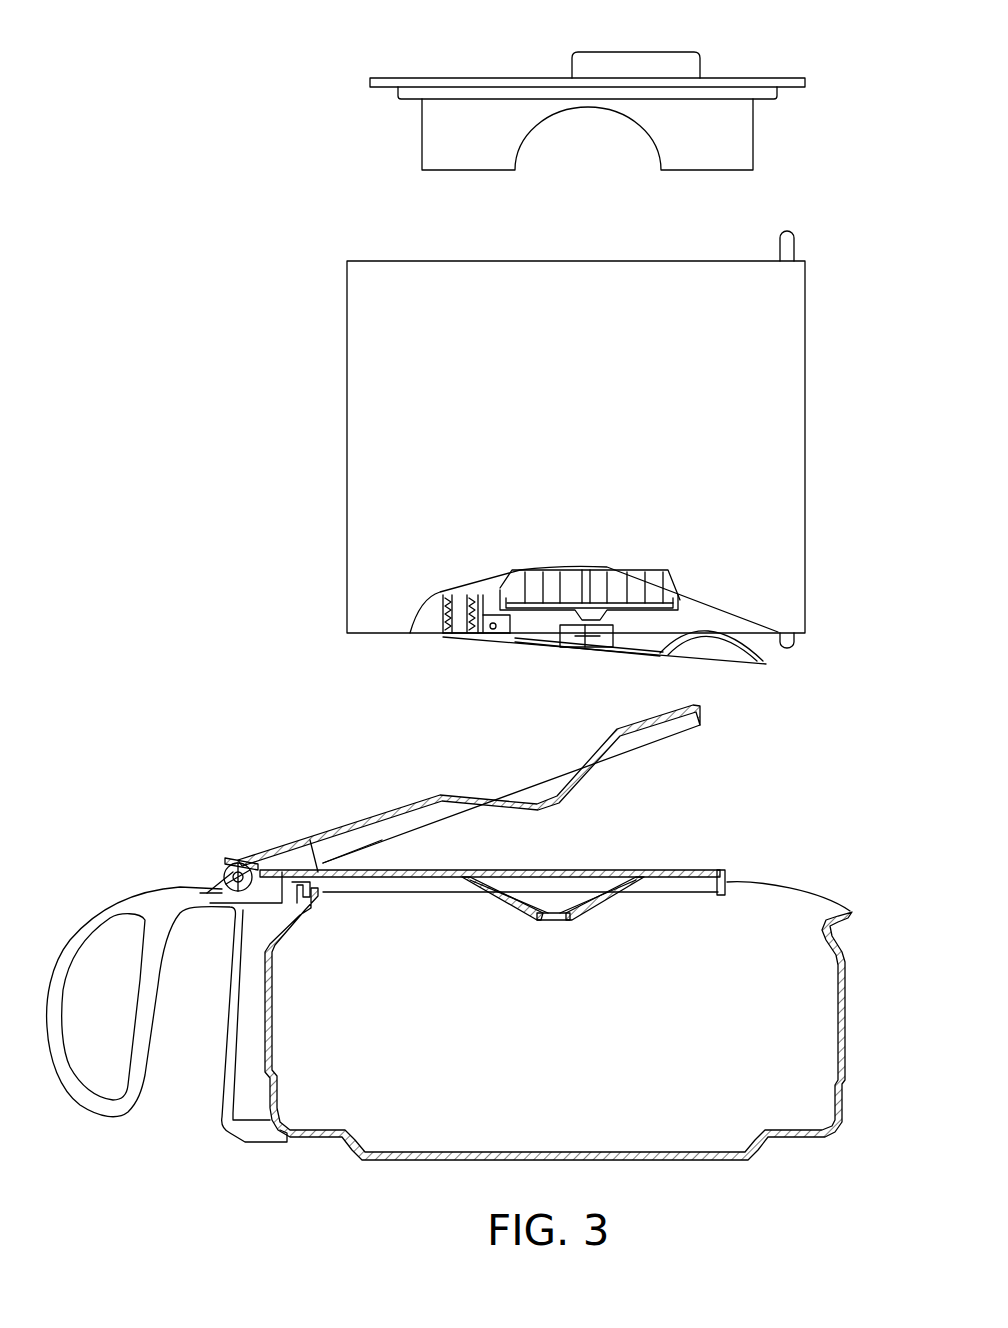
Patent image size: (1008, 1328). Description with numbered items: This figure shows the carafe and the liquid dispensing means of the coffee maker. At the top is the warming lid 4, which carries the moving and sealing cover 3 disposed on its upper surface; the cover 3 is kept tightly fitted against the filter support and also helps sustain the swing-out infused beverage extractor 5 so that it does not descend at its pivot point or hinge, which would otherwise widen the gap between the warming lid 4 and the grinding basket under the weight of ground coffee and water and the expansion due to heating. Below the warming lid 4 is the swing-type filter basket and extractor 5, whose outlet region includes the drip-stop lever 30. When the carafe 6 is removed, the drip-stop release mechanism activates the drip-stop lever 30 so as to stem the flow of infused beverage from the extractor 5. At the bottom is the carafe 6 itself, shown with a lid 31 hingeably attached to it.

The moving and sealing cover 3 is at (630, 52).
The warming lid 4 is at (370, 80).
The swing-type filter basket and extractor 5 is at (347, 485).
The drip-stop lever 30 is at (772, 660).
The lid 31 is at (375, 805).
The carafe 6 is at (843, 983).